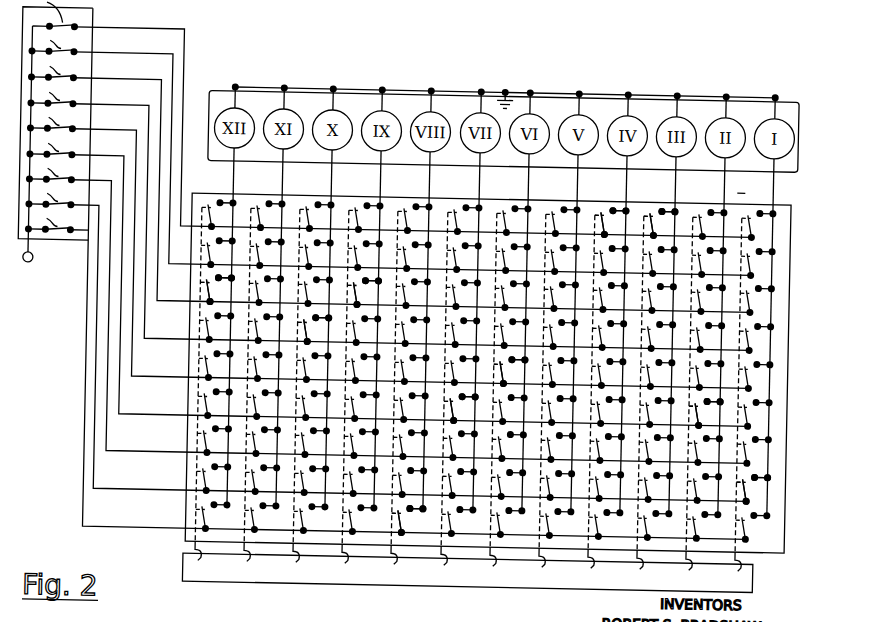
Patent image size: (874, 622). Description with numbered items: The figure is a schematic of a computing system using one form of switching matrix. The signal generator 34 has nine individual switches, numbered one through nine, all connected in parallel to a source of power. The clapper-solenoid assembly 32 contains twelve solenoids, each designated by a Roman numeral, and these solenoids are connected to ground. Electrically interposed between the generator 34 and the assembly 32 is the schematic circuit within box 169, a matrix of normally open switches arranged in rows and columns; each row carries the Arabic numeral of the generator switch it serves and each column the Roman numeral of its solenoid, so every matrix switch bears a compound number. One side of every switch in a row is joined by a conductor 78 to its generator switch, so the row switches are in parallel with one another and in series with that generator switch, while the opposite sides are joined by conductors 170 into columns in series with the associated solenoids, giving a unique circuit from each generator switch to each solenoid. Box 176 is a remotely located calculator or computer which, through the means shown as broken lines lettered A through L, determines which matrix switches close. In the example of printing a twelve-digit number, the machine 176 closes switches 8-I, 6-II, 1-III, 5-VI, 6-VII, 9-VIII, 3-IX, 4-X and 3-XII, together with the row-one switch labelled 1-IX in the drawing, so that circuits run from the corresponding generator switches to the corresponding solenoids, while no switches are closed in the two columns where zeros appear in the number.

The clapper-solenoid assembly 32 is at (226, 87).
The signal generator 34 is at (95, 12).
The conductor 78 is at (92, 347).
The box 169 is at (410, 264).
The conductors 170 is at (238, 178).
The calculator or computer 176 is at (444, 582).
The matrix switch 3-XII is at (220, 279).
The matrix switch 3-IX is at (368, 281).
The matrix switch 4-X is at (319, 317).
The matrix switch 5-VI is at (514, 364).
The matrix switch 6-VII is at (468, 398).
The matrix switch 6-II is at (706, 399).
The matrix switch 9-VIII is at (418, 507).
The matrix switch 8-I is at (756, 493).
The matrix switch 1-IX is at (604, 213).
The matrix switch 1-III is at (654, 208).